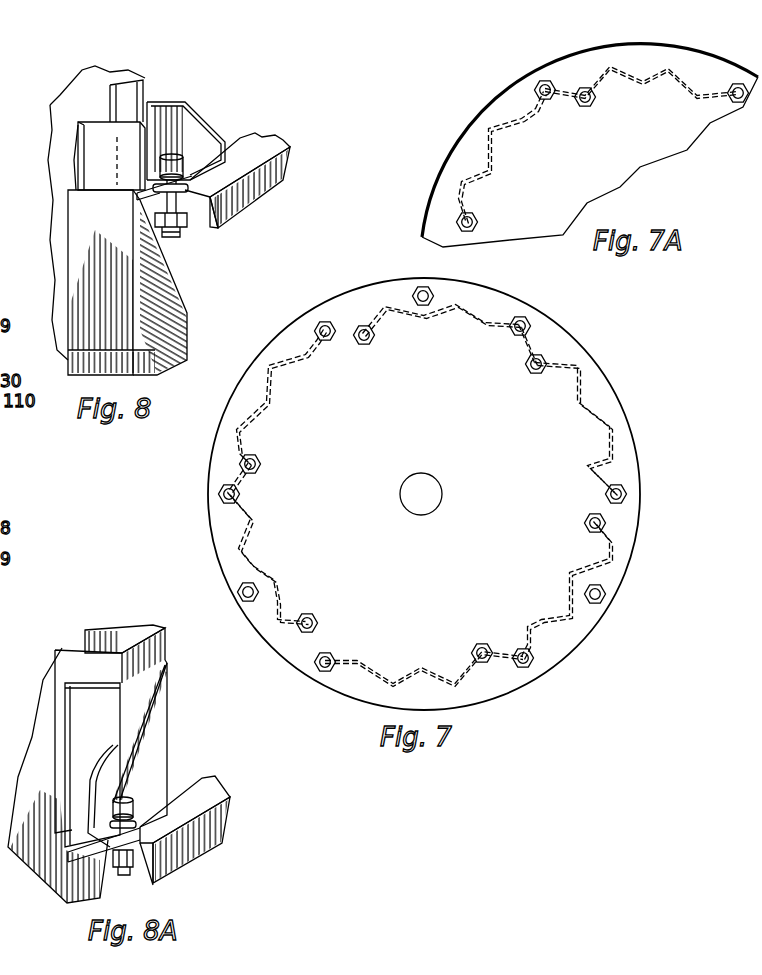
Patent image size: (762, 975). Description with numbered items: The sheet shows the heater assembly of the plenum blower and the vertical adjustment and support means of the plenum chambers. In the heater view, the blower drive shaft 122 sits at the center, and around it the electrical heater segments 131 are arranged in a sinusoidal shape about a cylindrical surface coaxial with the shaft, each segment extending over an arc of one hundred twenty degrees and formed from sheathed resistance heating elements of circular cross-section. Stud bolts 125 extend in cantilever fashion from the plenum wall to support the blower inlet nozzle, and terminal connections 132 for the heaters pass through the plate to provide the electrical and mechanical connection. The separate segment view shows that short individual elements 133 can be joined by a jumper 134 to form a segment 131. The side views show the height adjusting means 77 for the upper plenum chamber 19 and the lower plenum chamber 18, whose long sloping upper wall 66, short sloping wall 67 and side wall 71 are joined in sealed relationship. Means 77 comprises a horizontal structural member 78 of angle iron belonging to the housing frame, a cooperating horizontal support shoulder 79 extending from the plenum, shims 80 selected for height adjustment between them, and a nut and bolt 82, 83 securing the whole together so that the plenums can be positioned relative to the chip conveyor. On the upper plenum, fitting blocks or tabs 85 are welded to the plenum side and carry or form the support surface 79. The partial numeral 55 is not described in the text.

In FIG. 8A, the plenum chamber 18 is at (123, 633).
In FIG. 8, the upper plenum chamber 19 is at (173, 373).
In FIG. 8A, the frame member 55 is at (55, 775).
In FIG. 8A, the long sloping upper wall 66 is at (167, 648).
In FIG. 8, the short sloping wall 67 is at (140, 84).
In FIG. 8, the side wall 71 is at (72, 115).
In FIG. 8, the height adjusting means 77 is at (222, 112).
In FIG. 8A, the height adjusting means 77 is at (170, 727).
In FIG. 8, the horizontal structural member 78 is at (240, 223).
In FIG. 8A, the horizontal structural member 78 is at (190, 863).
In FIG. 8, the horizontal support shoulder 79 is at (74, 177).
In FIG. 8A, the horizontal support shoulder 79 is at (63, 827).
In FIG. 8, the shims 80 is at (240, 180).
In FIG. 8A, the shims 80 is at (185, 829).
In FIG. 8, the nut 82 is at (198, 216).
In FIG. 8A, the nut 82 is at (130, 853).
In FIG. 8, the bolt 83 is at (180, 237).
In FIG. 8A, the bolt 83 is at (122, 877).
In FIG. 8, the fitting blocks or tabs 85 is at (93, 153).
In FIG. 7, the drive shaft 122 is at (411, 492).
In FIG. 7, the stud bolts 125 is at (430, 288).
In FIG. 7, the electrical heater segments 131 is at (271, 417).
In FIG. 7, the terminal connections 132 is at (326, 652).
In FIG. 7A, the short individual elements 133 is at (498, 150).
In FIG. 7, the jumper 134 is at (241, 481).
In FIG. 7A, the jumper 134 is at (562, 98).